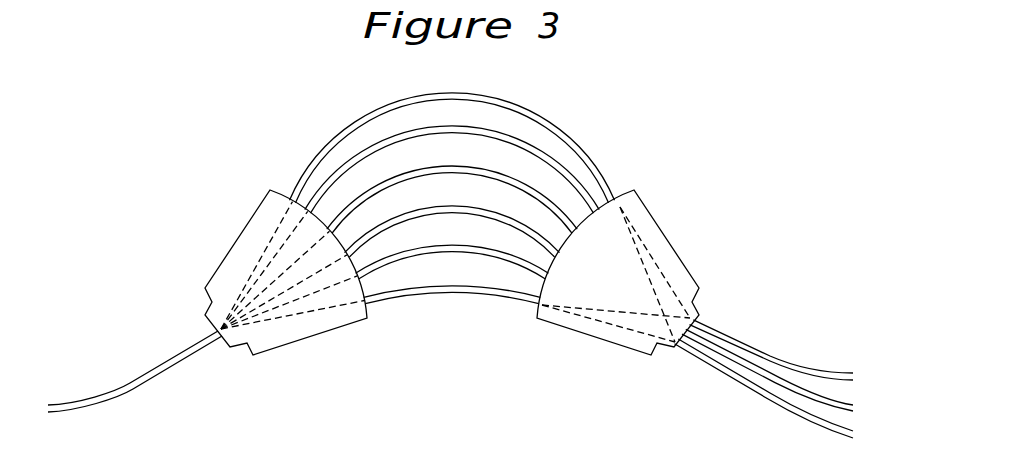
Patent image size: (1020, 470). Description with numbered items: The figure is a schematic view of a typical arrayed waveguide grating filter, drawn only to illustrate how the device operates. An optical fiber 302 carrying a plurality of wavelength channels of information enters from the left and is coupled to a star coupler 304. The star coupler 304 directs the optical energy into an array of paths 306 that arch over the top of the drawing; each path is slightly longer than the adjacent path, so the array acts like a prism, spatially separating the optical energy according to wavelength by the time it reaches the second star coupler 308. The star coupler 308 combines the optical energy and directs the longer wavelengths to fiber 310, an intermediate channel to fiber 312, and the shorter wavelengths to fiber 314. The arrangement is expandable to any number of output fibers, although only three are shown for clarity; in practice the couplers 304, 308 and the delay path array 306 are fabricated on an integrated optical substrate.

The optical fiber 302 is at (135, 387).
The star coupler 304 is at (276, 272).
The array of paths 306 is at (342, 170).
The star coupler 308 is at (626, 272).
The fiber 310 is at (799, 355).
The fiber 312 is at (795, 374).
The fiber 314 is at (792, 393).